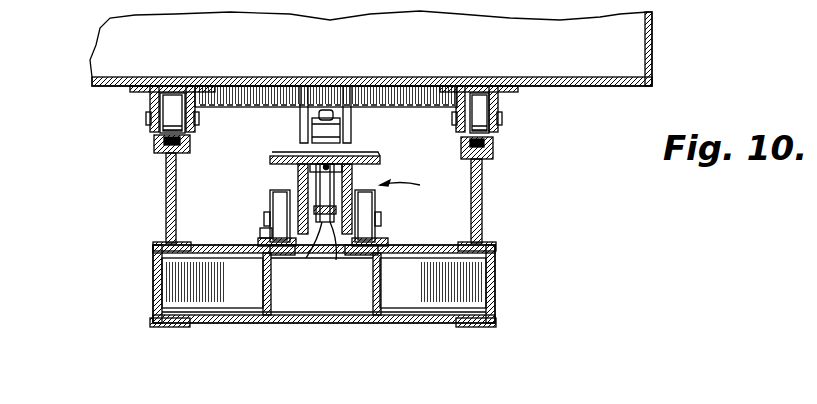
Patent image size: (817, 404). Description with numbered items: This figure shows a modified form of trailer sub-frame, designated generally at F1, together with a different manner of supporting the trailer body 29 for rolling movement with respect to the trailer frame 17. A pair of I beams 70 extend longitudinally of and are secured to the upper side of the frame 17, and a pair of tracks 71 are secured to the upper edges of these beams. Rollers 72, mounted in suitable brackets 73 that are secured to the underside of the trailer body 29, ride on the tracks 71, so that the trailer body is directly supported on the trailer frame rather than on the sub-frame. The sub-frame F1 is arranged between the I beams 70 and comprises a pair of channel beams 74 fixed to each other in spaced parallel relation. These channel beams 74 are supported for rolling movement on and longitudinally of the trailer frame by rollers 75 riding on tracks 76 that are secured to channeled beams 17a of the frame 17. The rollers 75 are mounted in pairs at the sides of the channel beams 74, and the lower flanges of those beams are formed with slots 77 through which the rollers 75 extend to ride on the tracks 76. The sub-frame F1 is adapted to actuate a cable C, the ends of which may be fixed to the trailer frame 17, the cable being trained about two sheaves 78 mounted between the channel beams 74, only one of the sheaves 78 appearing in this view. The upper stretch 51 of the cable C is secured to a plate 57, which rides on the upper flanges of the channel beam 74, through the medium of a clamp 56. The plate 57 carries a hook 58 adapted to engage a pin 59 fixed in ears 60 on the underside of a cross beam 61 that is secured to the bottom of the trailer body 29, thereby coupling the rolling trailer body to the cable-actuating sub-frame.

The trailer body 29 is at (597, 86).
The cross beam 61 is at (405, 95).
The brackets 73 is at (150, 108).
The rollers 72 is at (168, 128).
The tracks 71 is at (493, 146).
The I beams 70 is at (166, 192).
The trailer frame 17 is at (495, 290).
The channeled beams 17a is at (283, 323).
The ears 60 is at (300, 124).
The pin 59 is at (338, 125).
The hook 58 is at (328, 115).
The plate 57 is at (355, 156).
The upper stretch 51 is at (342, 172).
The channel beams 74 is at (272, 166).
The clamp 56 is at (316, 175).
The rollers 75 is at (270, 204).
The slots 77 is at (262, 230).
The tracks 76 is at (262, 242).
The sheaves 78 is at (306, 258).
The cable C is at (336, 260).
The sub-frame F1 is at (413, 185).